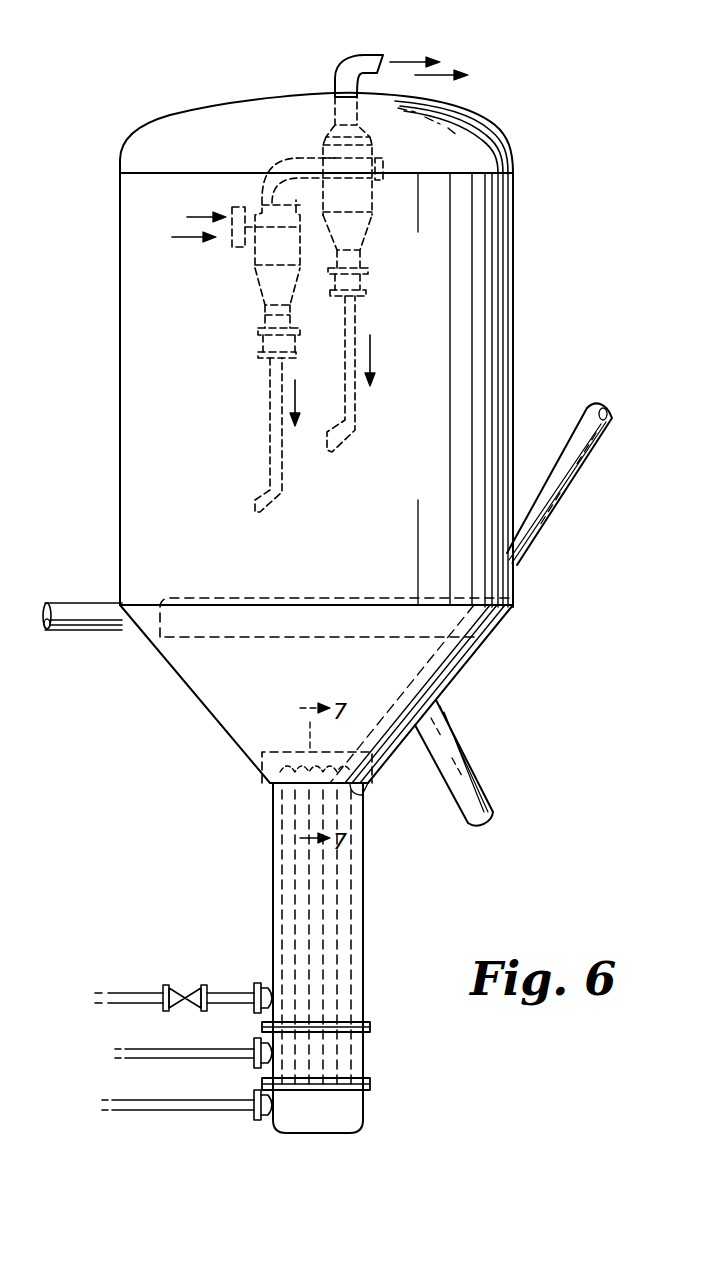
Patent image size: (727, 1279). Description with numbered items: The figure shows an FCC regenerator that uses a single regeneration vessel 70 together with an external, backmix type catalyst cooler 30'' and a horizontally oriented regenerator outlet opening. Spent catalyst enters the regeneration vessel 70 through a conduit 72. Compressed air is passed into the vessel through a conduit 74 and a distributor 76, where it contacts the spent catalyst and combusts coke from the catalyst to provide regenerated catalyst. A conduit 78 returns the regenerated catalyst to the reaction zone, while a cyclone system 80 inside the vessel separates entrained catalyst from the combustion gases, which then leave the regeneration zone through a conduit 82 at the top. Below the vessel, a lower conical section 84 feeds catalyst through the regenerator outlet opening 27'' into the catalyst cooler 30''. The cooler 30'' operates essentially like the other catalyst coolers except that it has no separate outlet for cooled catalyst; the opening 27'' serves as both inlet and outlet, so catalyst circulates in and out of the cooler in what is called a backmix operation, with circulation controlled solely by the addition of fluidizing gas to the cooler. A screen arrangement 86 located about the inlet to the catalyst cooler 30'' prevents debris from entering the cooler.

The regeneration vessel 70 is at (513, 322).
The conduit 72 is at (569, 488).
The conduit 74 is at (97, 640).
The distributor 76 is at (214, 597).
The conduit 78 is at (455, 741).
The cyclone system 80 is at (232, 287).
The conduit 82 is at (345, 57).
The lower conical section 84 is at (186, 690).
The screen arrangement 86 is at (270, 758).
The regenerator outlet opening 27'' is at (387, 790).
The catalyst cooler 30'' is at (232, 958).